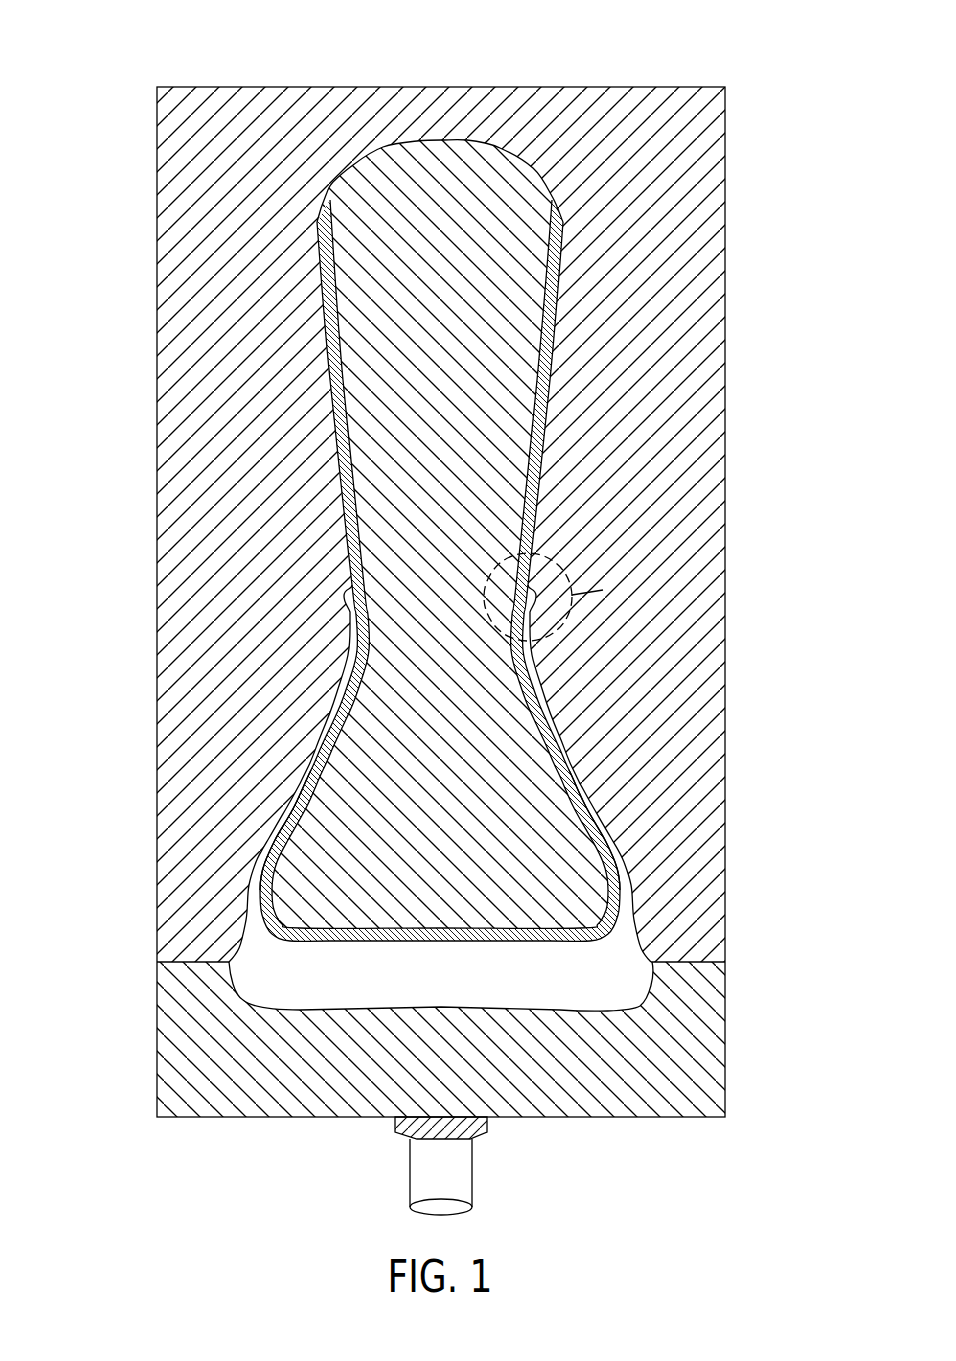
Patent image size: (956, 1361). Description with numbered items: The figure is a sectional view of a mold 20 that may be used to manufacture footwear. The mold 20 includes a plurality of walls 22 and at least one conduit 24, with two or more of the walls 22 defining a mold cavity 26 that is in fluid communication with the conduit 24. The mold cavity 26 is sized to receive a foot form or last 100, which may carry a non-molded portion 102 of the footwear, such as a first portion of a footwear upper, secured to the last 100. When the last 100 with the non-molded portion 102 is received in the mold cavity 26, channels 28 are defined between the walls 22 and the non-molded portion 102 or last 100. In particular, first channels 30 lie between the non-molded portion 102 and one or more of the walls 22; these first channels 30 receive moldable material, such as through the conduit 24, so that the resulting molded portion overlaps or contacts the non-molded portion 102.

The mold 20 is at (778, 78).
The walls 22 is at (720, 722).
The conduit 24 is at (466, 1166).
The mold cavity 26 is at (645, 966).
The channels 28 is at (250, 874).
The first channels 30 is at (262, 840).
The last 100 is at (468, 140).
The non-molded portion 102 is at (326, 350).